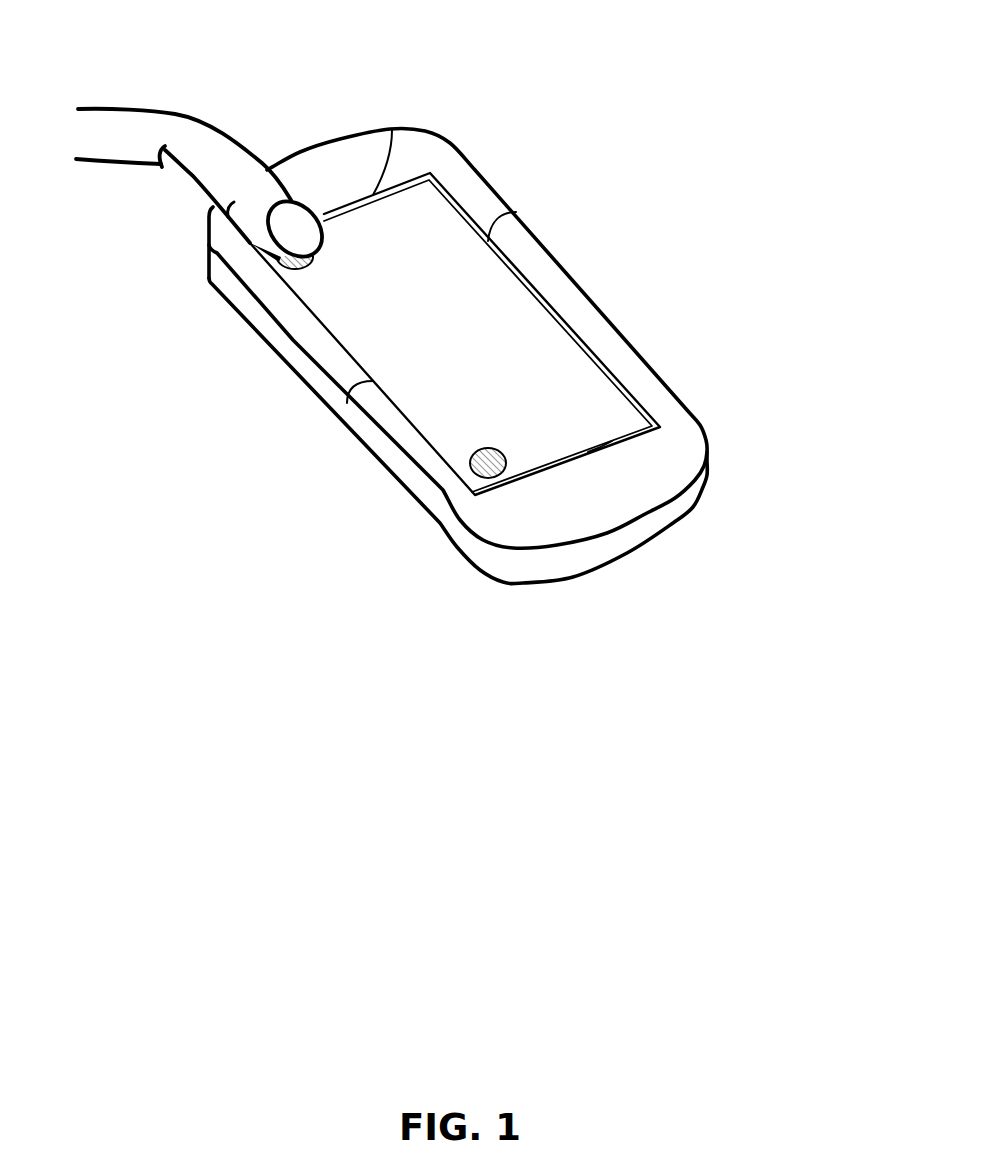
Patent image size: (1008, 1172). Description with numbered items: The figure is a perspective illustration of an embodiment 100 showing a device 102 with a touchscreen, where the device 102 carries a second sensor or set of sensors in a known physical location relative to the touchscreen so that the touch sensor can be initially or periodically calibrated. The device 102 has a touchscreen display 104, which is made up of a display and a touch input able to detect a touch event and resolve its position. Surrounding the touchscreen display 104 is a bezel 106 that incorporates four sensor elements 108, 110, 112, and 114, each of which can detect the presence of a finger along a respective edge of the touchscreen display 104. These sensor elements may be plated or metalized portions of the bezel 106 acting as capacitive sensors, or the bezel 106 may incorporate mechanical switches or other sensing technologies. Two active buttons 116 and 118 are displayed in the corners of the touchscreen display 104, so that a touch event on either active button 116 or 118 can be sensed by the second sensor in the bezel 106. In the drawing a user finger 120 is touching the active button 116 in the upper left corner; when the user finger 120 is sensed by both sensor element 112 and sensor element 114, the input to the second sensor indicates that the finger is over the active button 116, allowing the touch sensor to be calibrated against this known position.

The embodiment 100 is at (312, 780).
The device 102 is at (606, 543).
The touchscreen display 104 is at (607, 417).
The bezel 106 is at (572, 329).
The sensor element 108 is at (516, 212).
The sensor element 110 is at (590, 452).
The sensor element 112 is at (347, 403).
The sensor element 114 is at (392, 130).
The active button 116 is at (273, 263).
The active button 118 is at (477, 468).
The user finger 120 is at (193, 176).